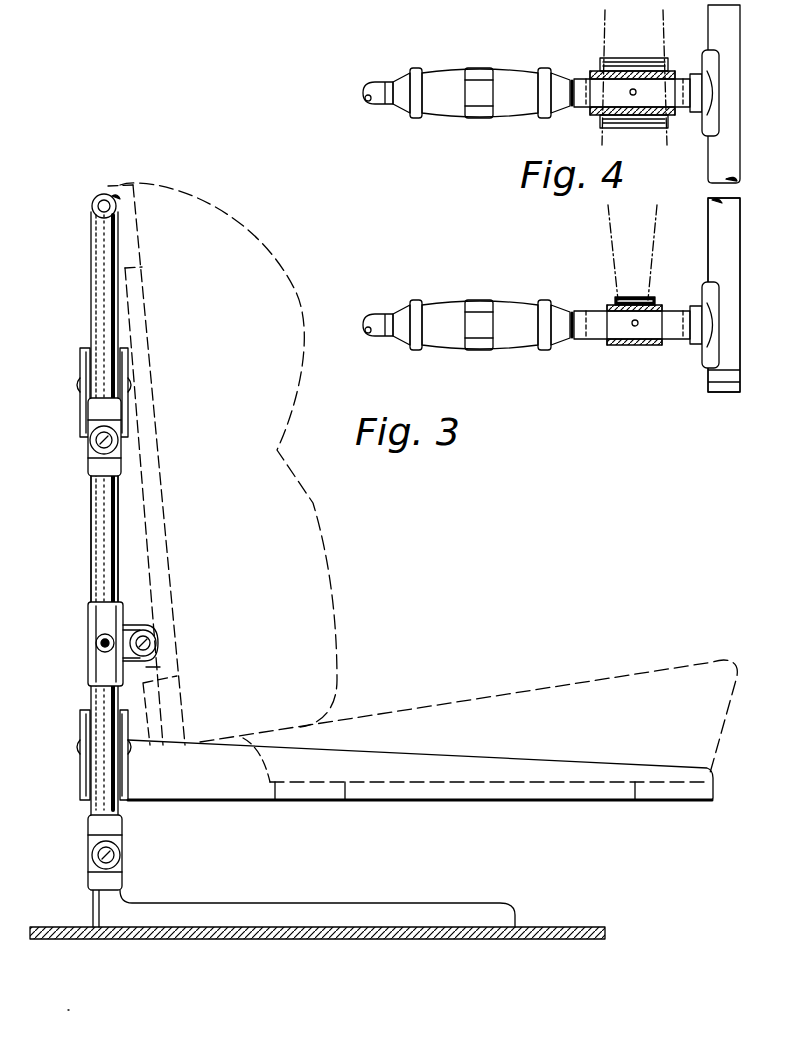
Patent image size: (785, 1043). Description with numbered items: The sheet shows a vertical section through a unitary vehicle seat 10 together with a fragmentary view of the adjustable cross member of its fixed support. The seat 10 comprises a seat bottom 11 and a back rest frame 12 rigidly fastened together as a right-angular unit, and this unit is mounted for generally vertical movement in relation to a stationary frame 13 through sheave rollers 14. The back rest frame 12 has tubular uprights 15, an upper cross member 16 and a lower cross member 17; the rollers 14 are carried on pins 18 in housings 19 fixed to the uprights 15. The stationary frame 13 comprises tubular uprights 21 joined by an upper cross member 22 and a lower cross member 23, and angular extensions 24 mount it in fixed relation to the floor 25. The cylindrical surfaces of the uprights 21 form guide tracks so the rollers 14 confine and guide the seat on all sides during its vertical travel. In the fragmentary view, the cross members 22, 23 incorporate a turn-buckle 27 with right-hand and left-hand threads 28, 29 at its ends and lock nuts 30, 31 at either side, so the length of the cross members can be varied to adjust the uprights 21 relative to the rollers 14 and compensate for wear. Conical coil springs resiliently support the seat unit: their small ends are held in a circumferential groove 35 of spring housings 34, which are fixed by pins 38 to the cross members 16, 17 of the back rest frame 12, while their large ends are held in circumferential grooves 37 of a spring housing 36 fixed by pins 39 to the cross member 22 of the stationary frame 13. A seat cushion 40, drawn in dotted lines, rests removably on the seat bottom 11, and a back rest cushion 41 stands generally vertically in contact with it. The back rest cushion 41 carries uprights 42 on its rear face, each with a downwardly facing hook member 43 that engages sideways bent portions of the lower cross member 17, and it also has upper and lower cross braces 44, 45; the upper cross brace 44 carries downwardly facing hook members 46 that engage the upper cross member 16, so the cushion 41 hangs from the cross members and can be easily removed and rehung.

In FIG. 3, the unitary vehicle seat 10 is at (500, 835).
In FIG. 3, the seat bottom 11 is at (620, 802).
In FIG. 3, the back rest frame 12 is at (85, 280).
In FIG. 3, the stationary frame 13 is at (85, 527).
In FIG. 3, the sheave roller 14 is at (78, 752).
In FIG. 3, the tubular upright 15 is at (102, 312).
In FIG. 3, the upper cross member 16 is at (98, 211).
In FIG. 3, the lower cross member 17 is at (95, 648).
In FIG. 3, the pin 18 is at (133, 738).
In FIG. 3, the housing 19 is at (80, 712).
In FIG. 3, the tubular upright 21 is at (725, 250).
In FIG. 3, the upper cross member 22 is at (92, 450).
In FIG. 4, the upper cross member 22 is at (399, 122).
In FIG. 3, the lower cross member 23 is at (94, 863).
In FIG. 3, the angular extension 24 is at (722, 393).
In FIG. 3, the floor 25 is at (580, 932).
In FIG. 3, the turn-buckle 27 is at (480, 301).
In FIG. 4, the turn-buckle 27 is at (480, 114).
In FIG. 3, the right-hand thread 28 is at (408, 343).
In FIG. 4, the right-hand thread 28 is at (409, 72).
In FIG. 3, the left-hand thread 29 is at (616, 343).
In FIG. 4, the left-hand thread 29 is at (617, 72).
In FIG. 3, the lock nut 30 is at (439, 341).
In FIG. 4, the lock nut 30 is at (438, 74).
In FIG. 3, the lock nut 31 is at (525, 341).
In FIG. 4, the lock nut 31 is at (525, 74).
In FIG. 3, the spring housing 34 is at (613, 299).
In FIG. 3, the circumferential groove 35 is at (610, 263).
In FIG. 4, the spring housing 36 is at (690, 65).
In FIG. 4, the circumferential groove 37 is at (633, 30).
In FIG. 3, the pin 38 is at (625, 351).
In FIG. 4, the pin 39 is at (594, 118).
In FIG. 3, the seat cushion 40 is at (440, 712).
In FIG. 3, the back rest cushion 41 is at (300, 523).
In FIG. 3, the upright 42 is at (156, 550).
In FIG. 3, the hook member 43 is at (146, 667).
In FIG. 3, the upper cross brace 44 is at (143, 252).
In FIG. 3, the lower cross brace 45 is at (156, 720).
In FIG. 3, the hook member 46 is at (95, 201).